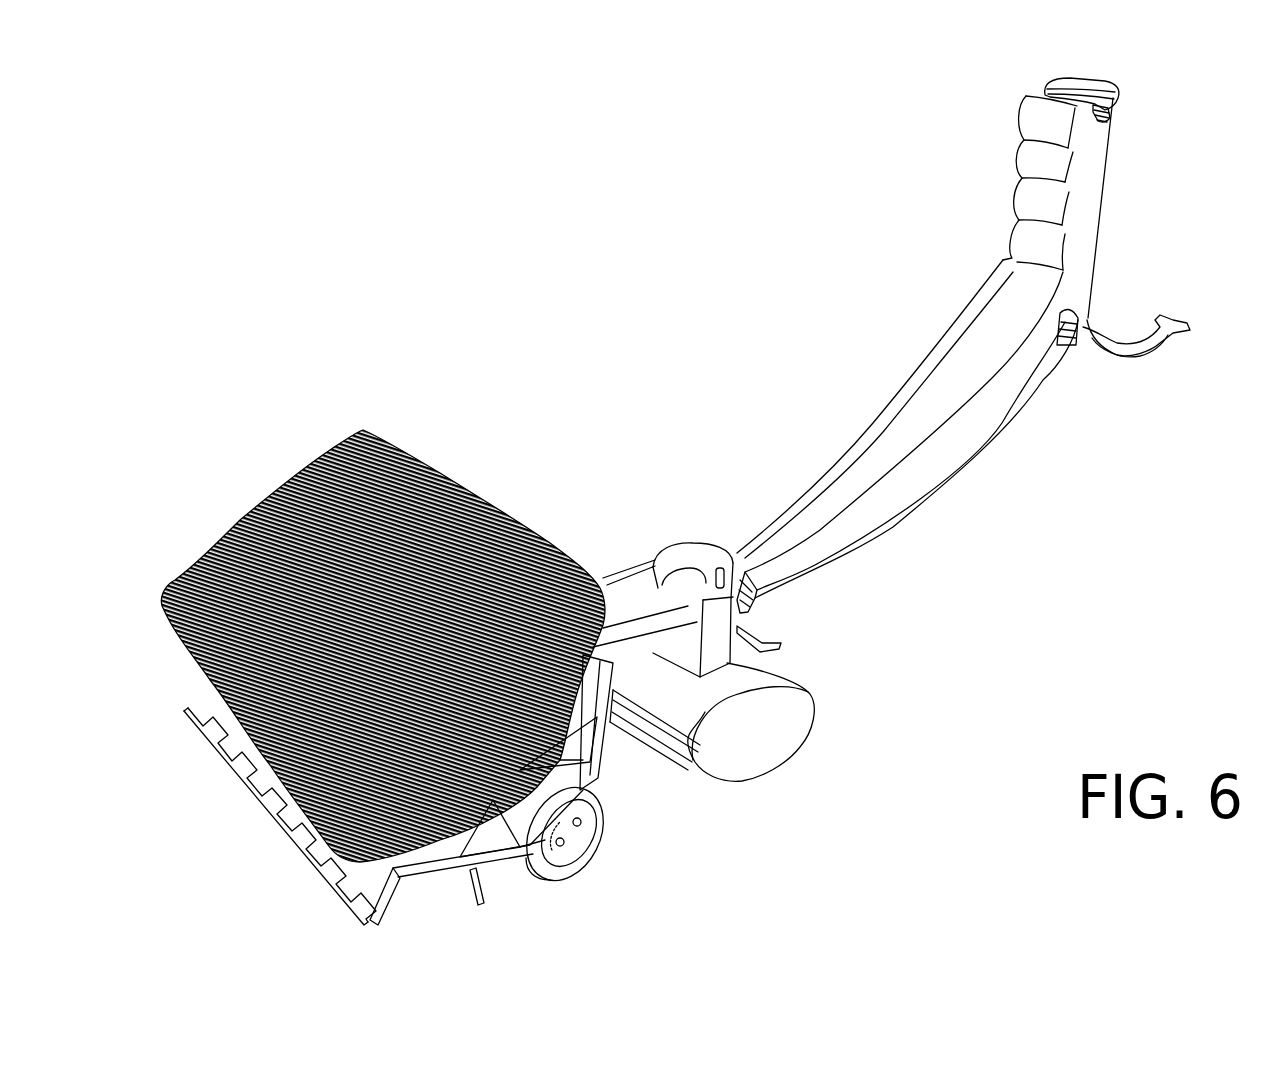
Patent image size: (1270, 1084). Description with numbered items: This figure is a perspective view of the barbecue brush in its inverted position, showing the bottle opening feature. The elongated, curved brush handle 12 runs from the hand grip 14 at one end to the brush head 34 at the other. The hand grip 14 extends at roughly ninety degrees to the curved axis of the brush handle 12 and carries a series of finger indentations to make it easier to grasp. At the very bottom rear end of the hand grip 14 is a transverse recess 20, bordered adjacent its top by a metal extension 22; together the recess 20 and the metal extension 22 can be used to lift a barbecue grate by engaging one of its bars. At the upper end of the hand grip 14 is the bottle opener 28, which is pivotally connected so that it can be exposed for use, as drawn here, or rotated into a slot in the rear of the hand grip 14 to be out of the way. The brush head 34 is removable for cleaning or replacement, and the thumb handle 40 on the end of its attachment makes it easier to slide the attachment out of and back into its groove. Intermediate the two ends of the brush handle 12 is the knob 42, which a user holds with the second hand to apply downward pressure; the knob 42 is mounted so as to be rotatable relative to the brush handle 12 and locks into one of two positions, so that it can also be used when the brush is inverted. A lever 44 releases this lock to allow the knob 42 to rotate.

The brush handle 12 is at (883, 453).
The hand grip 14 is at (1060, 172).
The transverse recess 20 is at (1106, 110).
The metal extension 22 is at (1046, 82).
The bottle opener 28 is at (1143, 352).
The brush head 34 is at (432, 462).
The thumb handle 40 is at (597, 807).
The knob 42 is at (757, 737).
The lever 44 is at (753, 633).